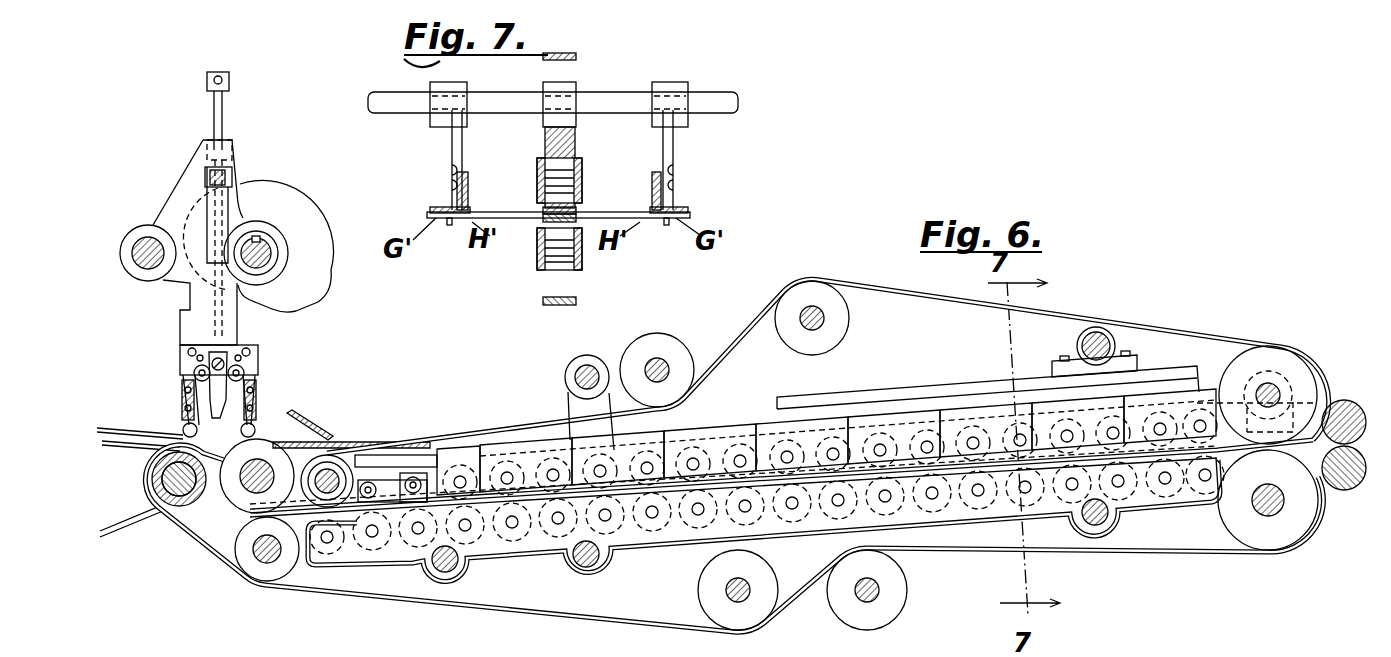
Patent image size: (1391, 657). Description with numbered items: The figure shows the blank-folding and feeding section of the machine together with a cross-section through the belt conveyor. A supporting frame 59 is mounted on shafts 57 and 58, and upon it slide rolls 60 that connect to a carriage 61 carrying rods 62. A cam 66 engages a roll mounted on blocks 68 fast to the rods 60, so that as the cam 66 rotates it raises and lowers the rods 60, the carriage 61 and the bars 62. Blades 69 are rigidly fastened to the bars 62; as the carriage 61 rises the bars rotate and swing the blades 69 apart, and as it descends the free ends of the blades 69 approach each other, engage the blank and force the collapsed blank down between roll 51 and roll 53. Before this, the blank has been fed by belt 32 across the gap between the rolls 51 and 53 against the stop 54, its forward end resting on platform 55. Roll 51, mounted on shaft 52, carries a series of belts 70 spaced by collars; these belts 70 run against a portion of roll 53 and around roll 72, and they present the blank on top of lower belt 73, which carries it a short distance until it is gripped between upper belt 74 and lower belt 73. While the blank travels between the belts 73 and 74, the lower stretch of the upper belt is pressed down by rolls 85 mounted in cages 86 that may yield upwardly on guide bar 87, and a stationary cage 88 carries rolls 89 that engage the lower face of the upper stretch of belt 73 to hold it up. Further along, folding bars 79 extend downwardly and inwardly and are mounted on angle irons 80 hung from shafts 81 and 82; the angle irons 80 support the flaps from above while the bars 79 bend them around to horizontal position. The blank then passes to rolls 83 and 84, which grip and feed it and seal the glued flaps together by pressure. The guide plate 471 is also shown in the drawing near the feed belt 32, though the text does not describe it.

In FIG. 6, the rolls 60 is at (225, 118).
In FIG. 6, the supporting frame 59 is at (190, 183).
In FIG. 6, the blocks 68 is at (233, 176).
In FIG. 6, the cam 66 is at (298, 208).
In FIG. 6, the shaft 57 is at (266, 257).
In FIG. 6, the shaft 58 is at (148, 243).
In FIG. 6, the carriage 61 is at (232, 337).
In FIG. 6, the rods 62 is at (244, 373).
In FIG. 6, the blades 69 is at (250, 400).
In FIG. 6, the upper guide plate 471 is at (113, 420).
In FIG. 6, the belt 32 is at (117, 450).
In FIG. 6, the stop 54 is at (332, 433).
In FIG. 6, the platform 55 is at (378, 440).
In FIG. 6, the roll 53 is at (256, 461).
In FIG. 6, the roll 51 is at (165, 492).
In FIG. 6, the shaft 52 is at (168, 507).
In FIG. 6, the belts 70 is at (214, 545).
In FIG. 6, the roll 72 is at (267, 567).
In FIG. 6, the lower belt 73 is at (347, 506).
In FIG. 7, the lower belt 73 is at (548, 305).
In FIG. 6, the upper belt 74 is at (300, 517).
In FIG. 7, the upper belt 74 is at (576, 210).
In FIG. 6, the shaft 81 is at (580, 380).
In FIG. 6, the rolls 85 is at (840, 455).
In FIG. 7, the rolls 85 is at (545, 183).
In FIG. 6, the guide bar 87 is at (893, 398).
In FIG. 7, the guide bar 87 is at (548, 140).
In FIG. 6, the shaft 82 is at (1104, 343).
In FIG. 7, the shaft 82 is at (395, 115).
In FIG. 6, the roll 83 is at (1344, 400).
In FIG. 6, the roll 84 is at (1344, 490).
In FIG. 6, the stationary cage 88 is at (687, 533).
In FIG. 7, the stationary cage 88 is at (545, 252).
In FIG. 6, the rolls 89 is at (548, 548).
In FIG. 7, the rolls 89 is at (565, 262).
In FIG. 7, the cages 86 is at (582, 172).
In FIG. 7, the angle irons 80 is at (682, 210).
In FIG. 7, the folding bars 79 is at (668, 226).